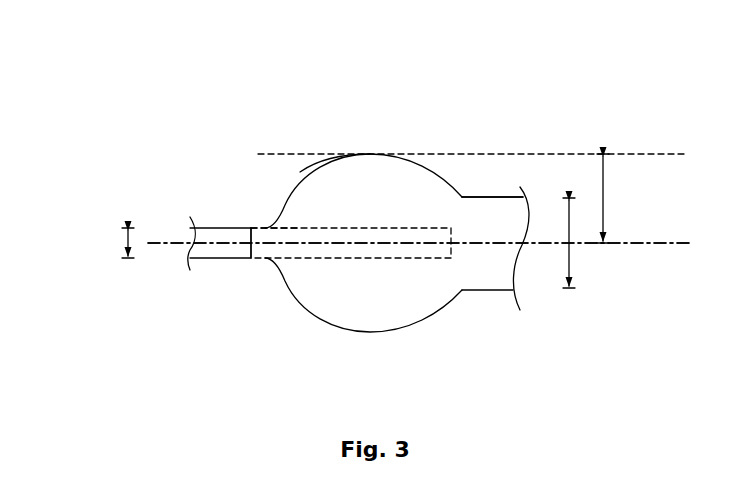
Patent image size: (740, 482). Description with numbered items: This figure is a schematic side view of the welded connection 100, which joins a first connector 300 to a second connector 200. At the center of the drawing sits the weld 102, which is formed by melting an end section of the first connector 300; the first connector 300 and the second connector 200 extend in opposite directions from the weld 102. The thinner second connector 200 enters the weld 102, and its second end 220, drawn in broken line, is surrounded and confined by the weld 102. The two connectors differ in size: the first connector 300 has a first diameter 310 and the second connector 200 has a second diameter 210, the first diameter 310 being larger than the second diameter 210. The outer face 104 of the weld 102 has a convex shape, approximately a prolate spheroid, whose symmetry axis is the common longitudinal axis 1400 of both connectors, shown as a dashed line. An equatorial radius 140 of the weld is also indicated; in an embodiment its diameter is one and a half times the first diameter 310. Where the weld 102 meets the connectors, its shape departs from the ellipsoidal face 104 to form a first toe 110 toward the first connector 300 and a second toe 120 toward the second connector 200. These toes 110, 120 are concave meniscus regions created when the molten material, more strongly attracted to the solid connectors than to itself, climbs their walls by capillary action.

The welded connection 100 is at (287, 115).
The weld 102 is at (377, 172).
The face of the weld 104 is at (323, 168).
The first toe 110 is at (463, 197).
The second toe 120 is at (267, 226).
The equatorial radius 140 is at (605, 200).
The second connector 200 is at (205, 238).
The second diameter 210 is at (125, 243).
The second end 220 is at (292, 227).
The first connector 300 is at (482, 215).
The first diameter 310 is at (570, 253).
The common longitudinal axis 1400 is at (535, 243).